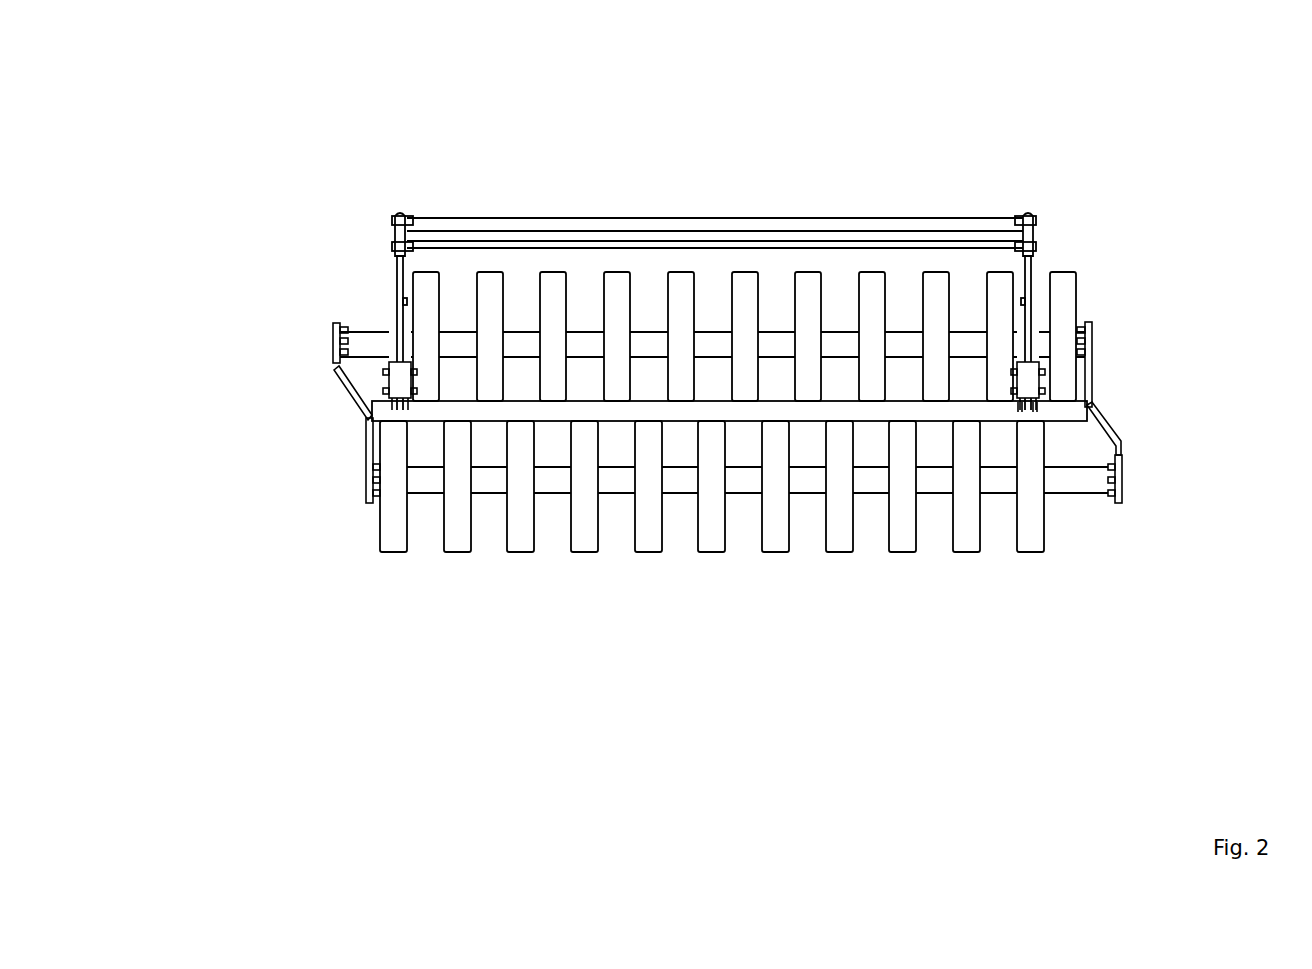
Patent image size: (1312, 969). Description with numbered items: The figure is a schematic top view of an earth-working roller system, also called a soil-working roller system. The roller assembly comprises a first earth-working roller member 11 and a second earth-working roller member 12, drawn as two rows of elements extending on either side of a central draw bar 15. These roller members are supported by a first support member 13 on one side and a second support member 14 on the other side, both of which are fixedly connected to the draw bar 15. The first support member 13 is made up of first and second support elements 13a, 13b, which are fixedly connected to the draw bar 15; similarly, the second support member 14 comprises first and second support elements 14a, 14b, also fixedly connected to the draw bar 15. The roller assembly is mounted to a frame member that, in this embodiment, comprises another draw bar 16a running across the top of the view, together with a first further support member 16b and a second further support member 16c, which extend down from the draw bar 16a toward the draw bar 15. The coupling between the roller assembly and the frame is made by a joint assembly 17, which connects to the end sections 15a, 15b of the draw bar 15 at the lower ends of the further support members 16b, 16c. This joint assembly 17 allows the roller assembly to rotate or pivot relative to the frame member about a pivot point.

The first earth-working roller member 11 is at (1068, 292).
The second earth-working roller member 12 is at (394, 540).
The first support member 13 is at (340, 398).
The first support element 13a is at (340, 335).
The second support element 13b is at (367, 497).
The second support member 14 is at (1092, 408).
The first support element 14a is at (1092, 367).
The second support element 14b is at (1122, 483).
The draw bar 15 is at (689, 414).
The end section of the draw bar 15a is at (370, 437).
The end section of the draw bar 15b is at (1029, 412).
The draw bar 16a is at (800, 228).
The first further support member 16b is at (395, 260).
The second further support member 16c is at (1030, 262).
The joint assembly 17 is at (389, 375).